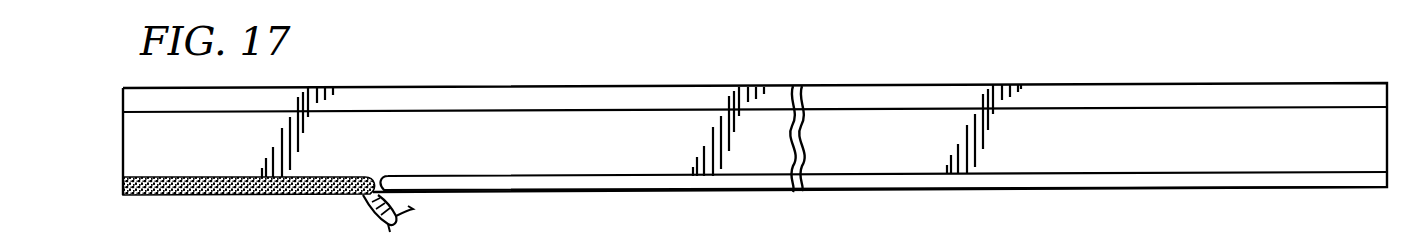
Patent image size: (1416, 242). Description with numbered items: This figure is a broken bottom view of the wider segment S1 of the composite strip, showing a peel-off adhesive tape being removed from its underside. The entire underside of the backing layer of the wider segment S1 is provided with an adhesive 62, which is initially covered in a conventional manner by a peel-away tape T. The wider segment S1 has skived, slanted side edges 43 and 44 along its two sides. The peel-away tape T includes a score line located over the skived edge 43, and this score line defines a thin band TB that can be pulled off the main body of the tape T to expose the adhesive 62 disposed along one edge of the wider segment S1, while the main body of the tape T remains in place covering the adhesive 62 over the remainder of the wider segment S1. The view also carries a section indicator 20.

The peel-away tape T is at (555, 123).
The thin band TB is at (575, 183).
The wider segment S1 is at (960, 85).
The slanted side edge 44 is at (1279, 88).
The skived edge 43 is at (1287, 180).
The adhesive 62 is at (195, 194).
The section line for FIG. 20 is at (843, 0).